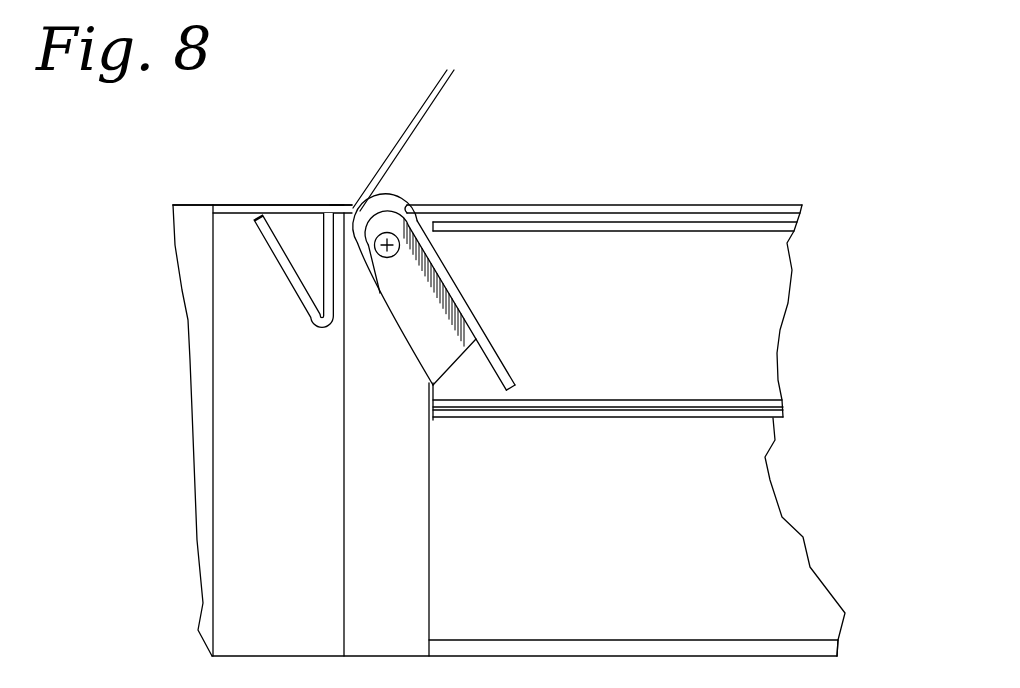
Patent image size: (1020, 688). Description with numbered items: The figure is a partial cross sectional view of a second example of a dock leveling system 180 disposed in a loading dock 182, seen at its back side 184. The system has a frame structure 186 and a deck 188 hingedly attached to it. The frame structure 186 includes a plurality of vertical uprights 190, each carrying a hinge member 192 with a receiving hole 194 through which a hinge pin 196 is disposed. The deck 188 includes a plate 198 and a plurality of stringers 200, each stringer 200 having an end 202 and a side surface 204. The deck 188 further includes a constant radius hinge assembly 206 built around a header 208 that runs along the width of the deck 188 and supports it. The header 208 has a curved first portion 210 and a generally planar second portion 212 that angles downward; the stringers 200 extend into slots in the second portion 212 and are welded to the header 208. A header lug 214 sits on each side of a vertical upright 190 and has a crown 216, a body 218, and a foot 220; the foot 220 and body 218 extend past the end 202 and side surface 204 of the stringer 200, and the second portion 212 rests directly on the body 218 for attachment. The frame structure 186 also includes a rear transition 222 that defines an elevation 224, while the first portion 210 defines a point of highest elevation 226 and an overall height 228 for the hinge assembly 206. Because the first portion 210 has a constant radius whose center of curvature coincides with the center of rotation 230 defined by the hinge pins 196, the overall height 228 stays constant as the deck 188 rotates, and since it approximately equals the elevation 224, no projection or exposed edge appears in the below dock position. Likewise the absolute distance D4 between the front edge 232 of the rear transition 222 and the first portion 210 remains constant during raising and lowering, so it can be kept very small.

The dock leveling system 180 is at (791, 109).
The loading dock 182 is at (181, 203).
The back side 184 is at (283, 98).
The frame structure 186 is at (640, 640).
The deck 188 is at (662, 205).
The vertical upright 190 is at (430, 592).
The hinge member 192 is at (377, 275).
The receiving hole 194 is at (362, 305).
The hinge pin 196 is at (386, 257).
The plate 198 is at (735, 205).
The stringer 200 is at (677, 420).
The end 202 is at (402, 250).
The side surface 204 is at (723, 328).
The constant radius hinge assembly 206 is at (412, 206).
The header 208 is at (422, 214).
The first portion 210 is at (357, 237).
The second portion 212 is at (487, 327).
The header lug 214 is at (390, 345).
The crown 216 is at (363, 262).
The body 218 is at (421, 366).
The foot 220 is at (458, 372).
The rear transition 222 is at (352, 204).
The elevation 224 is at (197, 199).
The point of highest elevation 226 is at (401, 196).
The overall height 228 is at (431, 220).
The center of rotation 230 is at (366, 250).
The front edge 232 is at (354, 200).
The absolute distance D4 is at (463, 105).